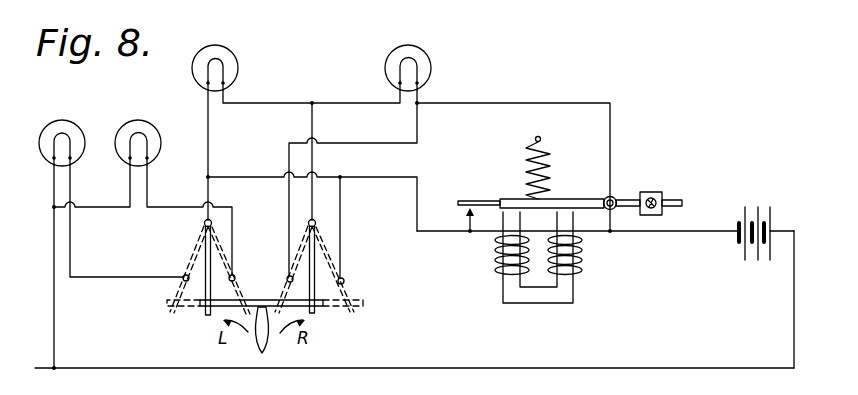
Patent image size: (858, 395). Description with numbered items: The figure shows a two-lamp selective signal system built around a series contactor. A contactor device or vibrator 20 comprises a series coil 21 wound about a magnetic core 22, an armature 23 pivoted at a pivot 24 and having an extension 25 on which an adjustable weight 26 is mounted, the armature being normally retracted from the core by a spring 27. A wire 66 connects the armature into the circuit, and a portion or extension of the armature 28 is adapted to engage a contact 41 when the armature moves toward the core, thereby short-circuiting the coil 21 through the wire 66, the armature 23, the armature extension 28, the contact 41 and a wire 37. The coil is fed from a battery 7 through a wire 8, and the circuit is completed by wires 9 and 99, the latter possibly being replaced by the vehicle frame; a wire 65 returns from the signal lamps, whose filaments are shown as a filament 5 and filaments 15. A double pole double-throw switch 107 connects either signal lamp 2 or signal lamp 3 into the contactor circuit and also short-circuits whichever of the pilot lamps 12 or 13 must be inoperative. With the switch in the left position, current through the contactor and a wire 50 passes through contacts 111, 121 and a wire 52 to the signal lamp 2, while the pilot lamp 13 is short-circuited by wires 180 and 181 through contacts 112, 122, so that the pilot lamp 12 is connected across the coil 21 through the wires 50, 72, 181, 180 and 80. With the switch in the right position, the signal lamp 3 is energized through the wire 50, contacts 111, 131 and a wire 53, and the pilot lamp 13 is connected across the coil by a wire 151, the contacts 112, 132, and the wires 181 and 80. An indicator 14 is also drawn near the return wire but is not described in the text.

The signal lamp 2 is at (62, 120).
The signal lamp 3 is at (138, 120).
The filament 5 is at (72, 140).
The pilot lamp 12 is at (215, 45).
The pilot lamp 13 is at (408, 45).
The filament 15 is at (225, 66).
The wire 72 is at (207, 134).
The wire 181 is at (311, 118).
The wire 80 is at (514, 103).
The wire 180 is at (418, 122).
The wire 50 is at (207, 190).
The wire 53 is at (172, 200).
The wire 65 is at (55, 314).
The wire 52 is at (127, 278).
The wire 99 is at (96, 369).
The wire 9 is at (793, 300).
The contact 111 is at (204, 223).
The contact 112 is at (309, 222).
The contact 121 is at (184, 276).
The contact 131 is at (234, 272).
The contact 122 is at (288, 278).
The contact 132 is at (345, 281).
The wire 151 is at (341, 235).
The double pole double-throw switch 107 is at (246, 352).
The indicator 14 is at (405, 393).
The wire 8 is at (676, 233).
The contact 41 is at (468, 208).
The wire 37 is at (468, 222).
The armature extension 28 is at (477, 200).
The armature 23 is at (517, 198).
The pivot 24 is at (607, 198).
The spring 27 is at (524, 155).
The adjustable weight 26 is at (652, 192).
The extension 25 is at (682, 201).
The battery 7 is at (758, 214).
The wire 66 is at (612, 226).
The magnetic core 22 is at (568, 292).
The series coil 21 is at (497, 262).
The contactor device 20 is at (538, 282).